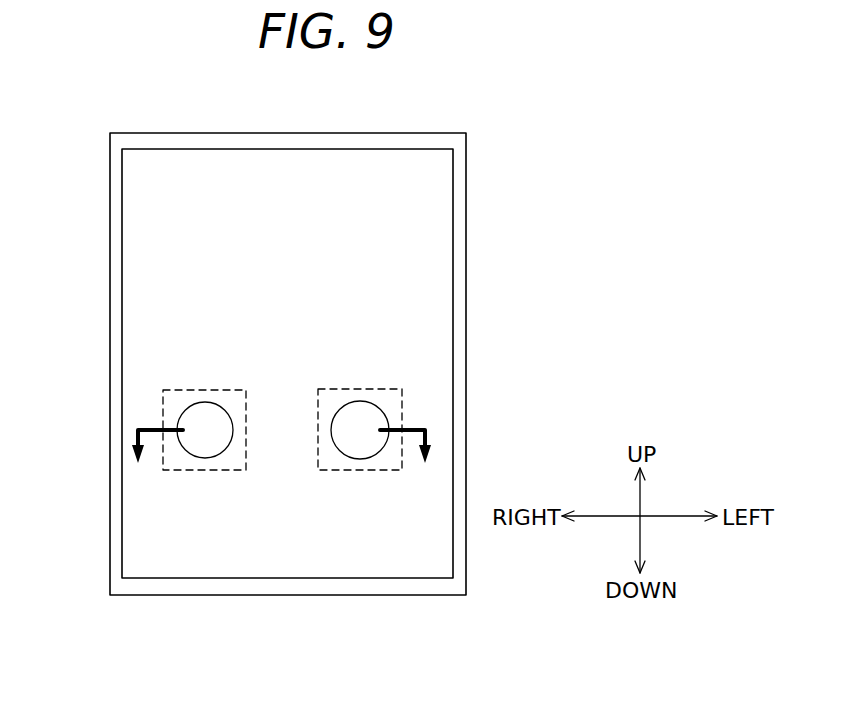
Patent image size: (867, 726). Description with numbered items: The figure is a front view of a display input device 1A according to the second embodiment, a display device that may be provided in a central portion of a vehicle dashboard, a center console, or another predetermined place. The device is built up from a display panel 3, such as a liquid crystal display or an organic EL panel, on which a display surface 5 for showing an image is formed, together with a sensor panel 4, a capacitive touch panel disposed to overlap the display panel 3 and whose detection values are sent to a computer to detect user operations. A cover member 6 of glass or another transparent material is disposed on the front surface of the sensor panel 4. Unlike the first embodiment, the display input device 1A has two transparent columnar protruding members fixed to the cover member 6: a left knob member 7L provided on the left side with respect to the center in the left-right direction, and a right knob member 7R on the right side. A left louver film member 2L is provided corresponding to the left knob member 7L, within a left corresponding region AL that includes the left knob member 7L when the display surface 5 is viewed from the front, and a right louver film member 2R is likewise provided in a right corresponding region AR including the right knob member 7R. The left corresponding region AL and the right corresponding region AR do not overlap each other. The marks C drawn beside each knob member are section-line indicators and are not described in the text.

The display input device 1A is at (397, 133).
The display panel 3 is at (410, 200).
The sensor panel 4 is at (410, 248).
The display surface 5 is at (410, 290).
The cover member 6 is at (410, 328).
The right corresponding region AR is at (175, 390).
The left corresponding region AL is at (375, 389).
The right knob member 7R is at (195, 419).
The left knob member 7L is at (373, 418).
The right louver film member 2R is at (233, 462).
The left louver film member 2L is at (389, 462).
The section line C is at (281, 462).